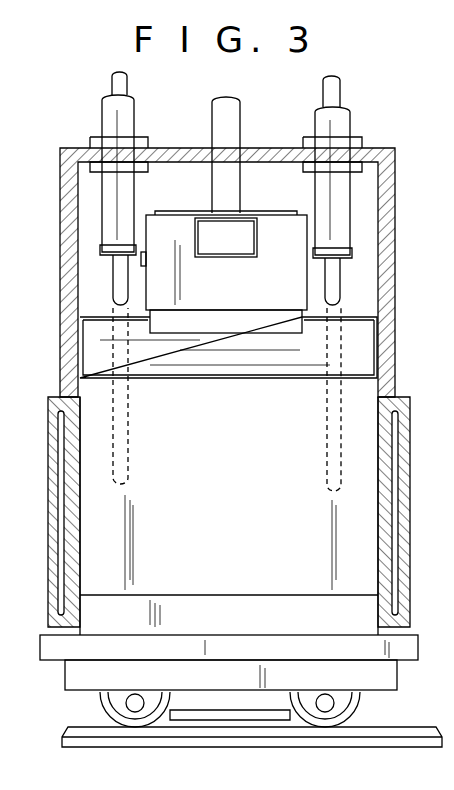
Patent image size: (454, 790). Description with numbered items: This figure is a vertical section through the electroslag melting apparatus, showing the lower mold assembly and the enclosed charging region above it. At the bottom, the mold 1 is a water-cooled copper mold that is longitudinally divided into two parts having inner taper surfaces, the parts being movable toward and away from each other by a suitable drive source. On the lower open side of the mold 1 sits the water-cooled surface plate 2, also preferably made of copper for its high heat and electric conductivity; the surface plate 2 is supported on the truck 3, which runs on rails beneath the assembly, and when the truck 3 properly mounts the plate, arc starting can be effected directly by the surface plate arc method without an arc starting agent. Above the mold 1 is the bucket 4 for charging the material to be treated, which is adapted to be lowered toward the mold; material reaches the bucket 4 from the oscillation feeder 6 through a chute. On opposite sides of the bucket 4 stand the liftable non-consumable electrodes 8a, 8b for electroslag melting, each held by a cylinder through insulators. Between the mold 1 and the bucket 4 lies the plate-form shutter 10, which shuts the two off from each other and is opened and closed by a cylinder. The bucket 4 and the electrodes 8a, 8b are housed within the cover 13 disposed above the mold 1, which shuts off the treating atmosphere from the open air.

The mold 1 is at (407, 446).
The surface plate 2 is at (363, 615).
The truck 3 is at (75, 677).
The bucket 4 is at (290, 293).
The oscillation feeder 6 is at (243, 230).
The non-consumable electrode 8a is at (118, 283).
The non-consumable electrode 8b is at (330, 272).
The shutter 10 is at (355, 363).
The cover 13 is at (392, 187).